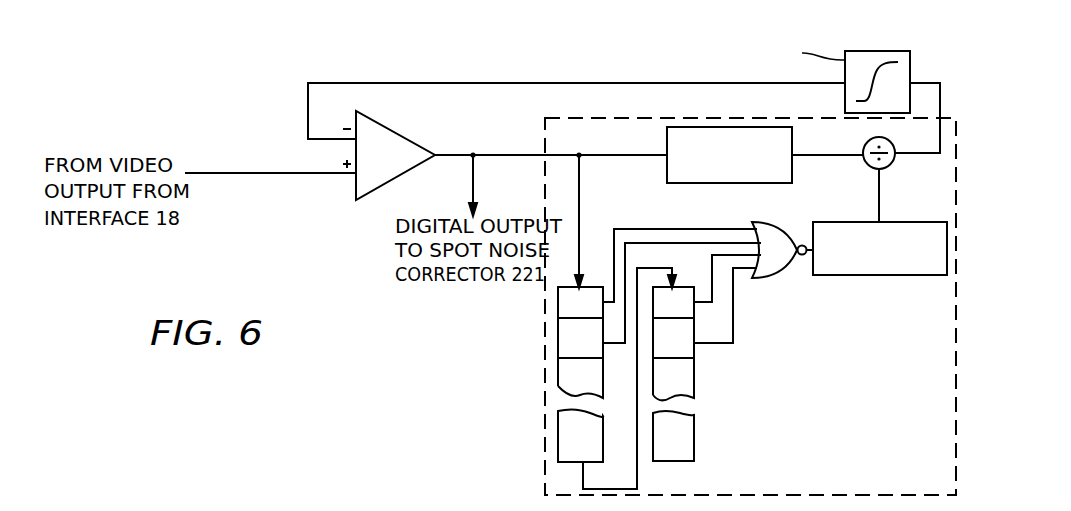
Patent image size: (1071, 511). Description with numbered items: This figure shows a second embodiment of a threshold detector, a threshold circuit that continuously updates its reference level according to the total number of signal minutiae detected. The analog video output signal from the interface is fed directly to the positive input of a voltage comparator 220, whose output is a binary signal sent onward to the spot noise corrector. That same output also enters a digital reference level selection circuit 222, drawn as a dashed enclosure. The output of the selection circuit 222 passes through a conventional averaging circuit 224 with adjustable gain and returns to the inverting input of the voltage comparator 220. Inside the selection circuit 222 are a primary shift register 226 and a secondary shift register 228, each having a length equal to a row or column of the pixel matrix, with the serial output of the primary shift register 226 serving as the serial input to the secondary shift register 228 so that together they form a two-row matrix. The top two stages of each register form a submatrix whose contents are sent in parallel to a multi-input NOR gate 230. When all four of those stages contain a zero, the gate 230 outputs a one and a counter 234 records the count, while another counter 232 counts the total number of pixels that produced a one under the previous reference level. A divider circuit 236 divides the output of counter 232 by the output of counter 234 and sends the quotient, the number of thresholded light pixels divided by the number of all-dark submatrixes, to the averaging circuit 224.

The voltage comparator 220 is at (400, 168).
The digital reference level selection circuit 222 is at (546, 427).
The averaging circuit 224 is at (873, 51).
The primary shift register 226 is at (558, 346).
The secondary shift register 228 is at (694, 377).
The multi-input NOR gate 230 is at (760, 276).
The counter 232 is at (778, 127).
The counter 234 is at (847, 275).
The divider circuit 236 is at (893, 170).